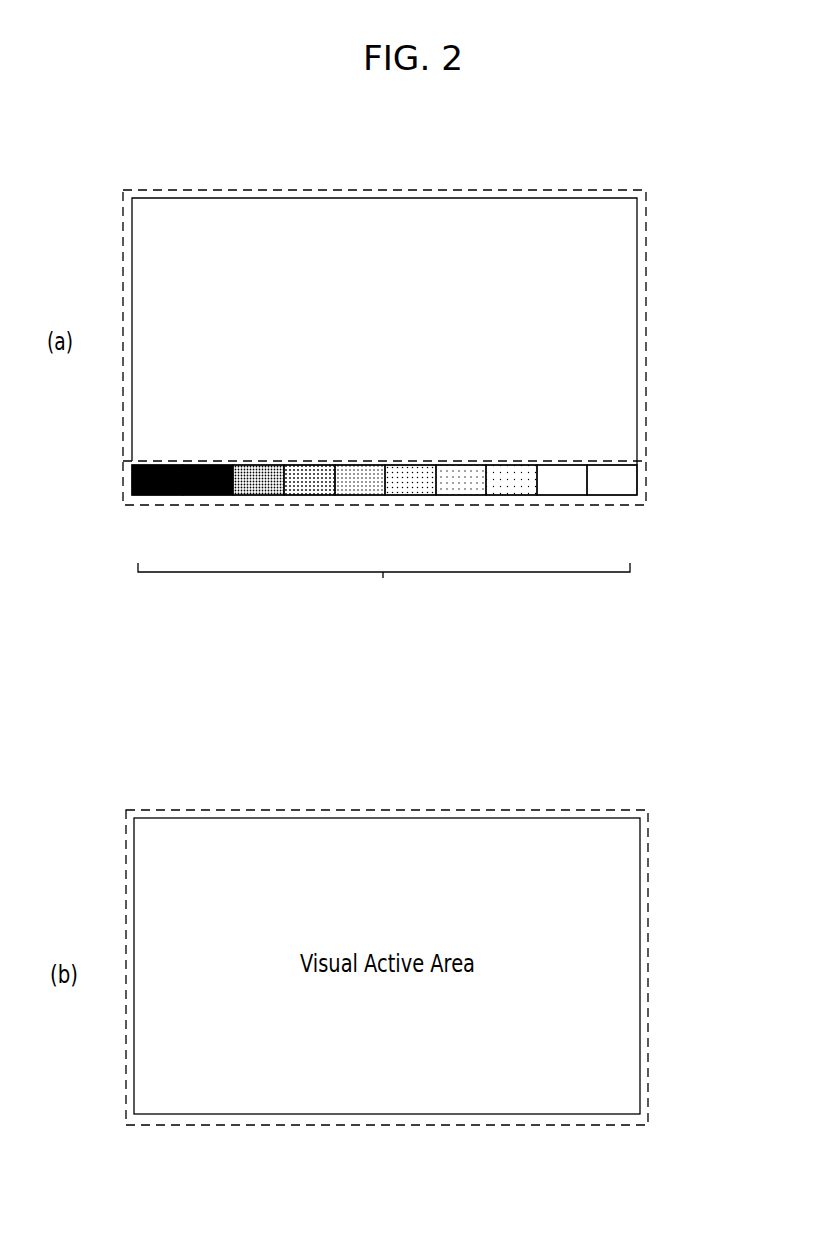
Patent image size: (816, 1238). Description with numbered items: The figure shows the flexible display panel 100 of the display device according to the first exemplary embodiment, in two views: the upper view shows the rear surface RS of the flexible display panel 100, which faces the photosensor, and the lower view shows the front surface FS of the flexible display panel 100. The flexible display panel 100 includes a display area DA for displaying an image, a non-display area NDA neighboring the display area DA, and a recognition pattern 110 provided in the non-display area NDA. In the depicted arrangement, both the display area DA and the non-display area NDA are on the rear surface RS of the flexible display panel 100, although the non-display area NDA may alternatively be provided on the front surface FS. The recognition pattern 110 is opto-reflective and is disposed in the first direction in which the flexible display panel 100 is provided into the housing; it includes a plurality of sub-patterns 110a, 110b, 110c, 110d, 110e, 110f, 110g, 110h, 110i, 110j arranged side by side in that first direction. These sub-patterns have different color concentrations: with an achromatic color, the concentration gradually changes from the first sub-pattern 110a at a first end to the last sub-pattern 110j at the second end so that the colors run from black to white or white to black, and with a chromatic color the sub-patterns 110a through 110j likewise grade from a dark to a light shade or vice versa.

The flexible display panel 100 is at (403, 136).
The recognition pattern 110 is at (384, 585).
The first sub-pattern 110a is at (155, 496).
The sub-pattern 110b is at (207, 496).
The sub-pattern 110c is at (259, 496).
The sub-pattern 110d is at (311, 496).
The sub-pattern 110e is at (365, 496).
The sub-pattern 110f is at (412, 496).
The sub-pattern 110g is at (463, 496).
The sub-pattern 110h is at (512, 496).
The sub-pattern 110i is at (562, 496).
The last sub-pattern 110j is at (611, 496).
The rear surface RS is at (608, 268).
The front surface FS is at (612, 996).
The display area DA is at (646, 331).
The non-display area NDA is at (647, 489).